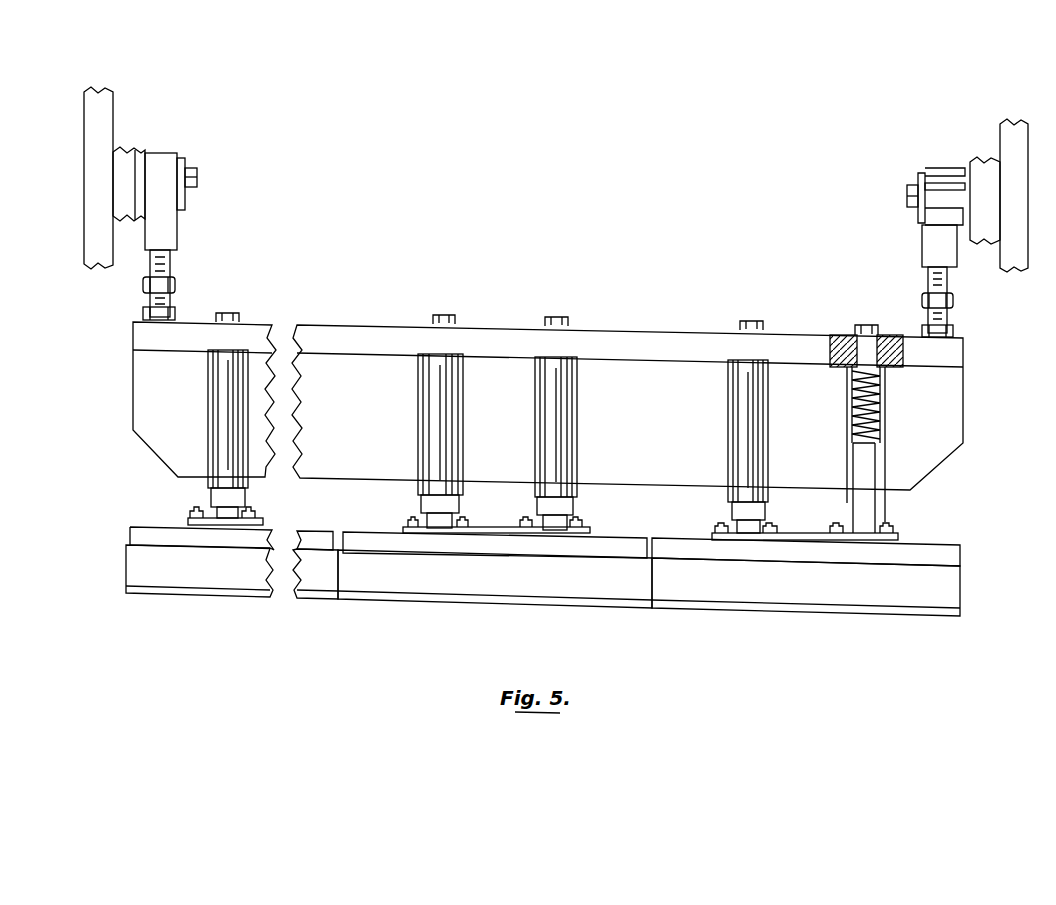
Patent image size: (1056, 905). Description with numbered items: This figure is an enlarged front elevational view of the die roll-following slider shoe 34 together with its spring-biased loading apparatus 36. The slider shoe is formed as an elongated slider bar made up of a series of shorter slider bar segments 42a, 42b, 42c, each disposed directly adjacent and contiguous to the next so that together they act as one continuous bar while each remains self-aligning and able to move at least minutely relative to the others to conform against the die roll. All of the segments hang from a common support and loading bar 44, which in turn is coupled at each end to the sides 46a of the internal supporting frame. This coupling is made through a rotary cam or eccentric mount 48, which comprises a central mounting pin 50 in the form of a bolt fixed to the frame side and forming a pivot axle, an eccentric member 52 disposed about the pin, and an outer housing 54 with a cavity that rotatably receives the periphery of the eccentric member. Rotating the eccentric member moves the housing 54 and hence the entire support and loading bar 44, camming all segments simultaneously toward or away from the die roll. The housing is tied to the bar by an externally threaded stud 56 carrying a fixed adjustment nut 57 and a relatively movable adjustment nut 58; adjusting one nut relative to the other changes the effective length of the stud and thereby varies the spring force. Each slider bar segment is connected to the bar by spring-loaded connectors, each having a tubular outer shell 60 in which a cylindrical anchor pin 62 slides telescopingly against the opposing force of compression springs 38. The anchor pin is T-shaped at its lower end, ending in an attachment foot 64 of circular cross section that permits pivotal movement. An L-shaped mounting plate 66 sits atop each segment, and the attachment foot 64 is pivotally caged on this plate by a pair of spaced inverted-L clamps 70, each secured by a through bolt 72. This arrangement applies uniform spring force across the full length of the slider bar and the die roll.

The slider shoe 34 is at (330, 618).
The spring-biased loading apparatus 36 is at (578, 217).
The compression springs 38 is at (882, 395).
The slider bar segment 42a is at (185, 570).
The slider bar segment 42b is at (520, 575).
The slider bar segment 42c is at (808, 585).
The support and loading bar 44 is at (663, 340).
The side of internal supporting frame 46a is at (104, 92).
The rotary cam or eccentric mount 48 is at (577, 210).
The central mounting pin 50 is at (196, 178).
The eccentric member 52 is at (935, 214).
The outer housing 54 is at (158, 222).
The externally threaded stud 56 is at (172, 260).
The fixed adjustment nut 57 is at (172, 282).
The movable adjustment nut 58 is at (170, 312).
The tubular outer shell 60 is at (222, 406).
The cylindrical anchor pin 62 is at (868, 494).
The attachment foot 64 is at (505, 527).
The mounting plate 66 is at (148, 535).
The clamps 70 is at (262, 522).
The through bolt 72 is at (250, 515).